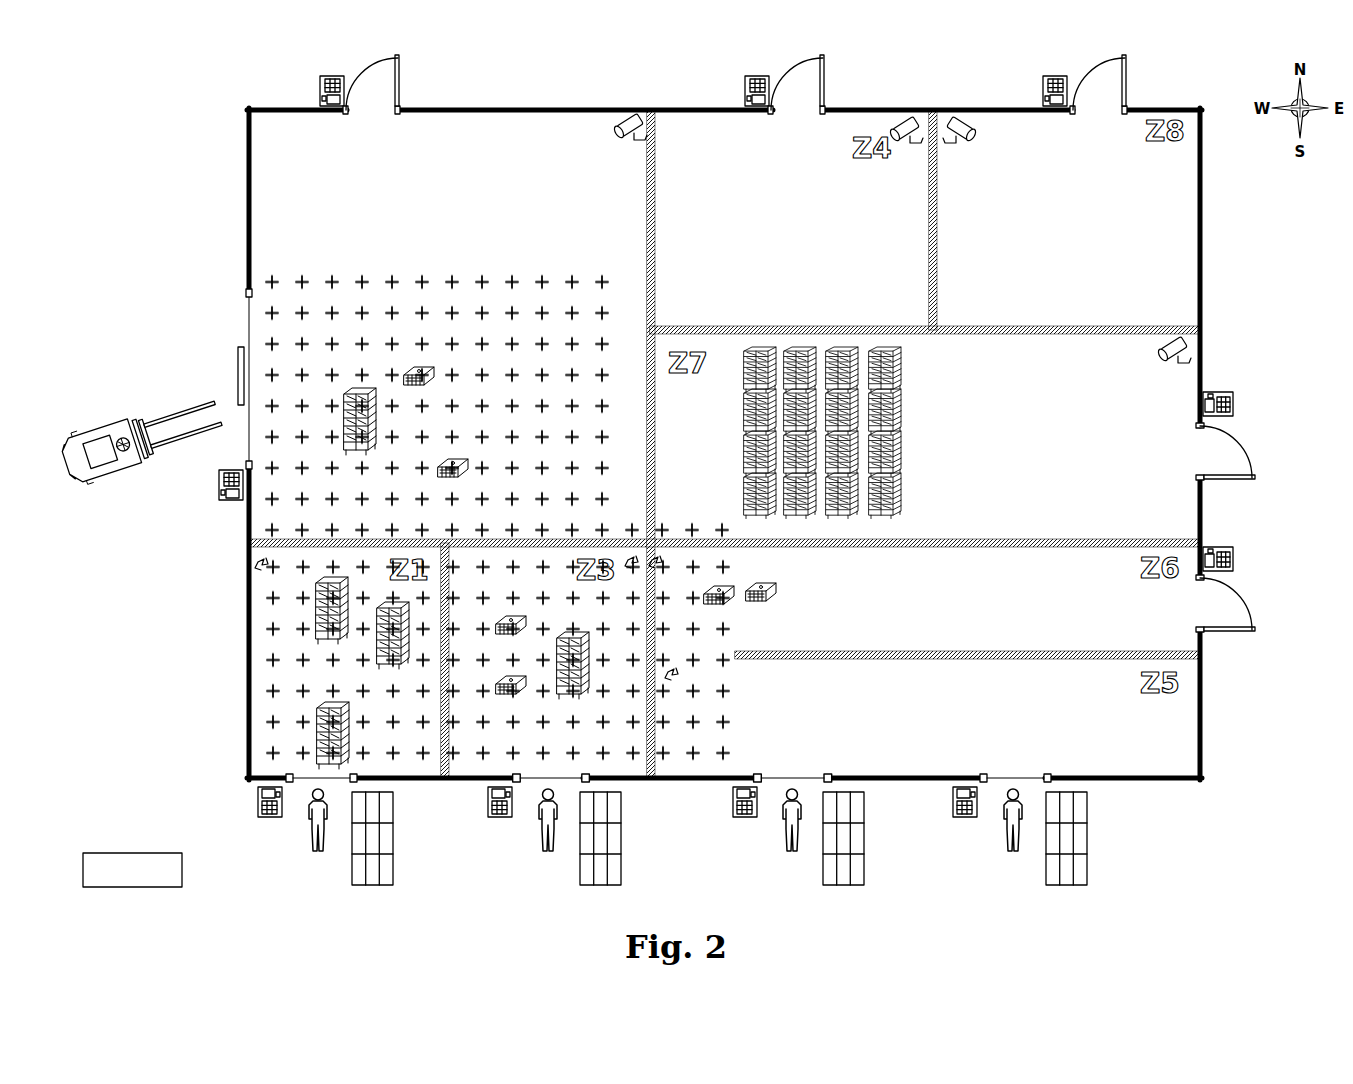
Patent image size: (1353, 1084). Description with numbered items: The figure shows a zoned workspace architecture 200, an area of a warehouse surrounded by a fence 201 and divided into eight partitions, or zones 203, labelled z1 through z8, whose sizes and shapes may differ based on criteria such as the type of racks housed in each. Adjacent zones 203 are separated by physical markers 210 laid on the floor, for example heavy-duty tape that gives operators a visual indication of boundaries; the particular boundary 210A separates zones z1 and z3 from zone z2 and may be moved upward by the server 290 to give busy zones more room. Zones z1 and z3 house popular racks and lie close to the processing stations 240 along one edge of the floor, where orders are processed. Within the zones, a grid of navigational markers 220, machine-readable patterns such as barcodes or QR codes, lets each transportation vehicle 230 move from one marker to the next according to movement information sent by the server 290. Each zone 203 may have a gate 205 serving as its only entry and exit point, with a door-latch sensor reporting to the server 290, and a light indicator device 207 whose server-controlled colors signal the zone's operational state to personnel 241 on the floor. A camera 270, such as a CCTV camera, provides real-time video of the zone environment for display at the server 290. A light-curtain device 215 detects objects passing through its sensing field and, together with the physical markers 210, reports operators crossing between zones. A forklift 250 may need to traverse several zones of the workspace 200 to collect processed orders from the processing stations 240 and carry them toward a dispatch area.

The zoned workspace architecture 200 is at (150, 173).
The fence 201 is at (447, 107).
The zone 203 is at (290, 208).
The gate 205 is at (368, 63).
The light indicator device 207 is at (745, 94).
The physical markers 210 is at (653, 200).
The zone boundary 210A is at (298, 542).
The light-curtain device 215 is at (1012, 775).
The navigational markers 220 is at (270, 283).
The transportation vehicle 230 is at (770, 596).
The processing station 240 is at (380, 886).
The personnel 241 is at (307, 818).
The forklift 250 is at (106, 430).
The camera 270 is at (624, 110).
The server 290 is at (100, 853).